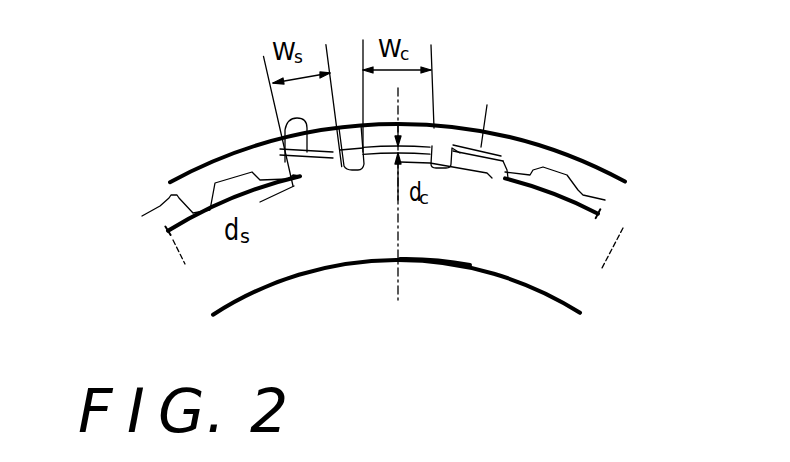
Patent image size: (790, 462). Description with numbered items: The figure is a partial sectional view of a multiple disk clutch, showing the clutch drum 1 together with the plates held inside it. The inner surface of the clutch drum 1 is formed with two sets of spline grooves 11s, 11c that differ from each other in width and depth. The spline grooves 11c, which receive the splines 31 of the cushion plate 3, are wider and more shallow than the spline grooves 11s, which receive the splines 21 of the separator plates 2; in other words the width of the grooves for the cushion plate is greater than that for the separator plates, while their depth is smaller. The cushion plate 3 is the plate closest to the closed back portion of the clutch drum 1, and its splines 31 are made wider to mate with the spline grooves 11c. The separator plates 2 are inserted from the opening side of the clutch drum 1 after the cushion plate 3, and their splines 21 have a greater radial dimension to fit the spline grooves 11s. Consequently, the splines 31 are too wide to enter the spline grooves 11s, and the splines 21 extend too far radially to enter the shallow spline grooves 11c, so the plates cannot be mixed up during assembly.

The clutch drum 1 is at (187, 173).
The splines of the separator plates 21 is at (142, 216).
The spline grooves 11s is at (335, 282).
The spline grooves 11c is at (390, 156).
The splines of the cushion plate 31 is at (431, 124).
The separator plates 2 is at (543, 270).
The cushion plate 3 is at (432, 262).